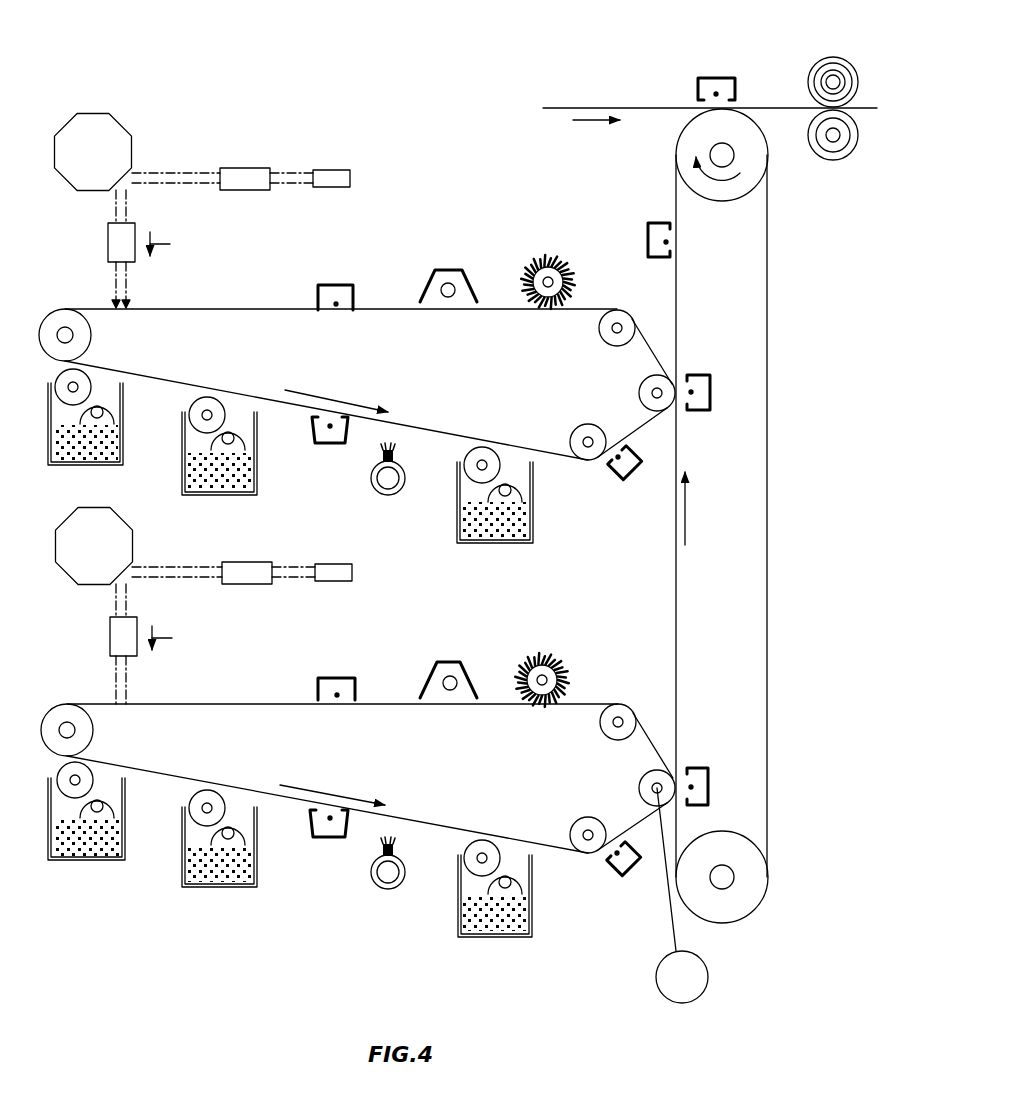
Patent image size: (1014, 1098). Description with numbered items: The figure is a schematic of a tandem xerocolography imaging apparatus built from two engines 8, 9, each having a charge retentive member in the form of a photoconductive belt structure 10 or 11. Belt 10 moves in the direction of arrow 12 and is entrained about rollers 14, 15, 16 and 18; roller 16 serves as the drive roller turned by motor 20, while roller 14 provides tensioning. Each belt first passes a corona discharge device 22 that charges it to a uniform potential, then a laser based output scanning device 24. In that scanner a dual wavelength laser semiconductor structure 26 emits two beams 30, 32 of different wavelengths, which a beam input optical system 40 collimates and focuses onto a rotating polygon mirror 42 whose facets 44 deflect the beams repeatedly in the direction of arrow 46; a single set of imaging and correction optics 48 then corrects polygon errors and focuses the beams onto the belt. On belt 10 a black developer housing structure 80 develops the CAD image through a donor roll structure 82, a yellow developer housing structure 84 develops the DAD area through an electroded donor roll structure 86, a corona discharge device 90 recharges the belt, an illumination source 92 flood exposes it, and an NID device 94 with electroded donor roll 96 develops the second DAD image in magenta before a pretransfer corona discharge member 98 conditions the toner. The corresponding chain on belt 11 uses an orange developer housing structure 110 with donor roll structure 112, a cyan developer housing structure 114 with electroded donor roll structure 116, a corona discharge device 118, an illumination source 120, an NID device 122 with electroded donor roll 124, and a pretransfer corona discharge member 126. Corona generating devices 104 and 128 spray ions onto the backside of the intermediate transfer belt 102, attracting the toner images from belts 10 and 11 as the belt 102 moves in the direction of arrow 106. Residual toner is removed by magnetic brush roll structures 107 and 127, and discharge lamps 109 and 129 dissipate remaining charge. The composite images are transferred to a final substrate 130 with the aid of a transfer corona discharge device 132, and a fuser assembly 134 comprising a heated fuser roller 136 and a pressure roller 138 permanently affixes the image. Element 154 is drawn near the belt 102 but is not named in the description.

The tandem xerocolography engine 8 is at (70, 660).
The tandem xerocolography engine 9 is at (68, 265).
The photoconductive belt structure 10 is at (287, 706).
The photoconductive belt structure 11 is at (420, 427).
The arrow 12 is at (340, 800).
The roller 14 is at (92, 723).
The roller 15 is at (580, 822).
The roller 16 is at (645, 783).
The roller 18 is at (608, 734).
The motor 20 is at (656, 978).
The corona discharge device 22 is at (318, 285).
The laser based output scanning device 24 is at (289, 134).
The dual wavelength laser semiconductor structure 26 is at (337, 176).
The laser beam 30 is at (298, 184).
The laser beam 32 is at (301, 172).
The beam input optical system 40 is at (247, 167).
The rotating polygon mirror 42 is at (108, 134).
The facets 44 is at (122, 180).
The arrow 46 is at (179, 442).
The imaging and correction optics 48 is at (125, 245).
The black developer housing structure 80 is at (84, 862).
The donor roll structure 82 is at (90, 773).
The yellow developer housing structure 84 is at (215, 893).
The electroded donor roll structure 86 is at (222, 804).
The corona discharge device 90 is at (327, 840).
The illumination source 92 is at (391, 892).
The NID device 94 is at (500, 938).
The electroded donor roll 96 is at (487, 848).
The pretransfer corona discharge member 98 is at (640, 868).
The intermediate transfer belt 102 is at (768, 514).
The corona generating device 104 is at (712, 770).
The arrow 106 is at (692, 542).
The magnetic brush roll structure 107 is at (541, 706).
The discharge lamp 109 is at (447, 660).
The orange developer housing structure 110 is at (101, 472).
The donor roll structure 112 is at (85, 378).
The cyan developer housing structure 114 is at (208, 500).
The electroded donor roll structure 116 is at (220, 408).
The corona discharge device 118 is at (327, 445).
The illumination source 120 is at (391, 492).
The NID device 122 is at (478, 552).
The electroded donor roll 124 is at (494, 454).
The pretransfer corona discharge member 126 is at (633, 478).
The magnetic brush roll structure 127 is at (552, 267).
The corona generating device 128 is at (712, 378).
The discharge lamp 129 is at (448, 268).
The final substrate 130 is at (655, 107).
The transfer corona discharge device 132 is at (722, 77).
The fuser assembly 134 is at (803, 73).
The heated fuser roller 136 is at (835, 160).
The pressure roller 138 is at (836, 57).
The station 154 is at (652, 222).